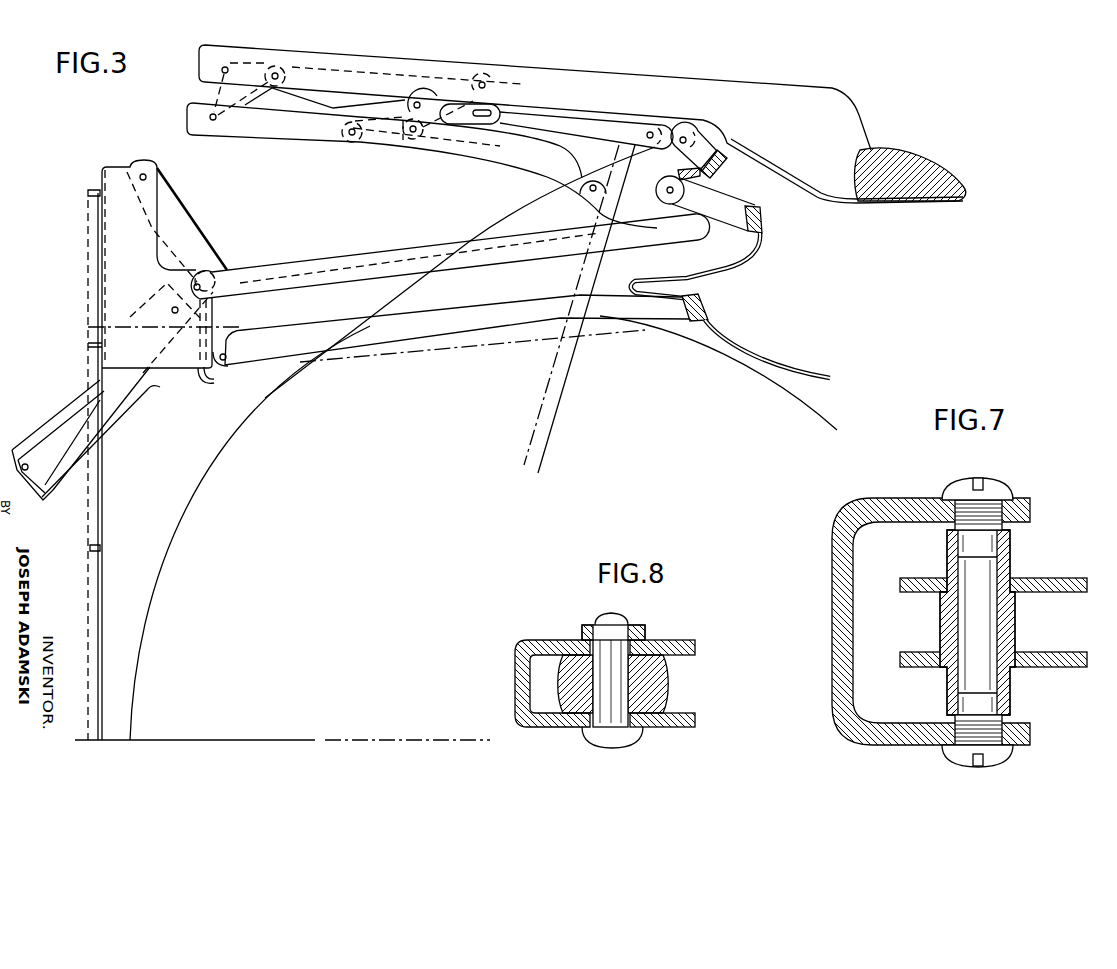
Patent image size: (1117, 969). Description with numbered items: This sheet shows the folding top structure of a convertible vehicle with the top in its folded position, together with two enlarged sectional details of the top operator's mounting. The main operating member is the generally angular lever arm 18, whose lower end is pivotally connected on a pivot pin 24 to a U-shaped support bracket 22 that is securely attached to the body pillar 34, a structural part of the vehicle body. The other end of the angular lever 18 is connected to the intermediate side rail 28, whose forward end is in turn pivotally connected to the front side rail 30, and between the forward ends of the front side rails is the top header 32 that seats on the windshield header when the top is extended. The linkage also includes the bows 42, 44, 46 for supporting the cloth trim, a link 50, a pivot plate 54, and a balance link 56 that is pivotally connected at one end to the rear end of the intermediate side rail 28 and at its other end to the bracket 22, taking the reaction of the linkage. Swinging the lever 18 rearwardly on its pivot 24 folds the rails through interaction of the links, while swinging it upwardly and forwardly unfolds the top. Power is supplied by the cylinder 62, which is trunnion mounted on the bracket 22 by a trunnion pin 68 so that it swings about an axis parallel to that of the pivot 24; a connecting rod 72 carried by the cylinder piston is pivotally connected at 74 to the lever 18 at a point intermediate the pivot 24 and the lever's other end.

In FIG. 3, the angular lever arm 18 is at (199, 241).
In FIG. 8, the angular lever arm 18 is at (675, 636).
In FIG. 7, the angular lever arm 18 is at (1069, 570).
In FIG. 3, the support bracket 22 is at (186, 386).
In FIG. 8, the support bracket 22 is at (552, 683).
In FIG. 7, the support bracket 22 is at (860, 496).
In FIG. 3, the pivot pin 24 is at (145, 173).
In FIG. 7, the pivot pin 24 is at (973, 582).
In FIG. 3, the intermediate side rail 28 is at (522, 170).
In FIG. 3, the front side rail 30 is at (636, 86).
In FIG. 3, the top header 32 is at (911, 175).
In FIG. 3, the body pillar 34 is at (88, 218).
In FIG. 3, the bow 42 is at (670, 310).
In FIG. 3, the bow 44 is at (732, 222).
In FIG. 3, the bow 46 is at (720, 166).
In FIG. 3, the link 50 is at (330, 86).
In FIG. 3, the pivot plate 54 is at (215, 95).
In FIG. 3, the balance link 56 is at (355, 262).
In FIG. 3, the cylinder 62 is at (72, 400).
In FIG. 3, the trunnion pin 68 is at (172, 310).
In FIG. 8, the connecting rod 72 is at (665, 686).
In FIG. 8, the pivotal connection 74 is at (610, 676).